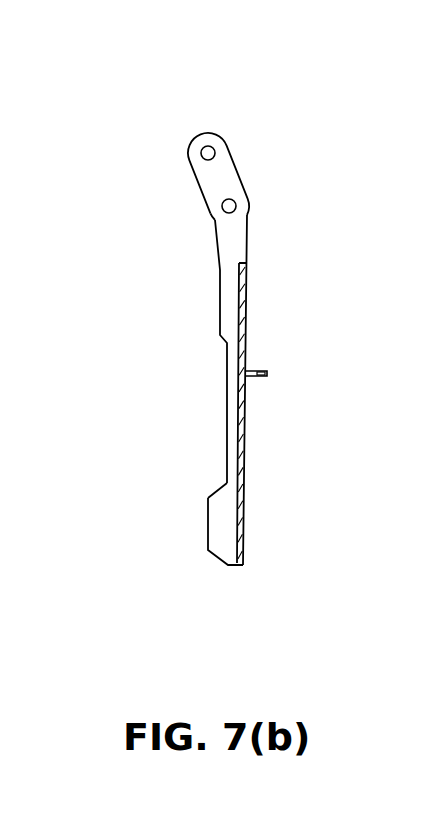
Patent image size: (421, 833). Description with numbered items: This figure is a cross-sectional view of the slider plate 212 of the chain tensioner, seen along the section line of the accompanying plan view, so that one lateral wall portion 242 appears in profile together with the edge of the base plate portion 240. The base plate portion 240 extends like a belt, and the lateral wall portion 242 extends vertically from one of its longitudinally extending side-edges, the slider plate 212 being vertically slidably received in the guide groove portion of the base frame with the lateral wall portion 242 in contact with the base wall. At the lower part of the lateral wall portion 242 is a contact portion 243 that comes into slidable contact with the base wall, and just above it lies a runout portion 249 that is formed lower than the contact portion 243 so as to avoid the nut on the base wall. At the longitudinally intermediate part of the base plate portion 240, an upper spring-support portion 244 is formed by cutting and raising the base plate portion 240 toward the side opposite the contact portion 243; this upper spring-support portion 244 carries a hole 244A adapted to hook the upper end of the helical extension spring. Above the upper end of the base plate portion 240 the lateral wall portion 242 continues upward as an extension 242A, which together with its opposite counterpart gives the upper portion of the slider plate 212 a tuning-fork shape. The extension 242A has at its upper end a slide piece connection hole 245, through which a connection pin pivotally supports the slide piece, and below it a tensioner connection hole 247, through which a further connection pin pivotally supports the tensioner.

The slider plate 212 is at (149, 63).
The extension 242A is at (223, 136).
The slide piece connection hole 245 is at (203, 151).
The tensioner connection hole 247 is at (224, 205).
The lateral wall portion 242 is at (236, 432).
The runout portion 249 is at (226, 450).
The contact portion 243 is at (208, 535).
The base plate portion 240 is at (244, 457).
The upper spring-support portion 244 is at (267, 373).
The hole 244A is at (258, 377).